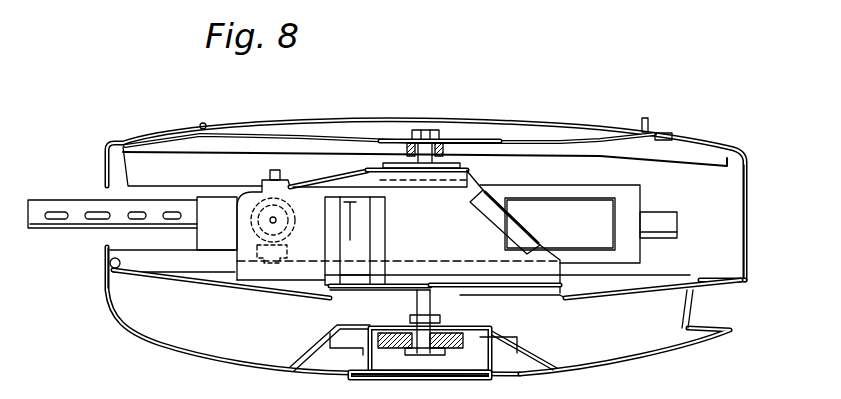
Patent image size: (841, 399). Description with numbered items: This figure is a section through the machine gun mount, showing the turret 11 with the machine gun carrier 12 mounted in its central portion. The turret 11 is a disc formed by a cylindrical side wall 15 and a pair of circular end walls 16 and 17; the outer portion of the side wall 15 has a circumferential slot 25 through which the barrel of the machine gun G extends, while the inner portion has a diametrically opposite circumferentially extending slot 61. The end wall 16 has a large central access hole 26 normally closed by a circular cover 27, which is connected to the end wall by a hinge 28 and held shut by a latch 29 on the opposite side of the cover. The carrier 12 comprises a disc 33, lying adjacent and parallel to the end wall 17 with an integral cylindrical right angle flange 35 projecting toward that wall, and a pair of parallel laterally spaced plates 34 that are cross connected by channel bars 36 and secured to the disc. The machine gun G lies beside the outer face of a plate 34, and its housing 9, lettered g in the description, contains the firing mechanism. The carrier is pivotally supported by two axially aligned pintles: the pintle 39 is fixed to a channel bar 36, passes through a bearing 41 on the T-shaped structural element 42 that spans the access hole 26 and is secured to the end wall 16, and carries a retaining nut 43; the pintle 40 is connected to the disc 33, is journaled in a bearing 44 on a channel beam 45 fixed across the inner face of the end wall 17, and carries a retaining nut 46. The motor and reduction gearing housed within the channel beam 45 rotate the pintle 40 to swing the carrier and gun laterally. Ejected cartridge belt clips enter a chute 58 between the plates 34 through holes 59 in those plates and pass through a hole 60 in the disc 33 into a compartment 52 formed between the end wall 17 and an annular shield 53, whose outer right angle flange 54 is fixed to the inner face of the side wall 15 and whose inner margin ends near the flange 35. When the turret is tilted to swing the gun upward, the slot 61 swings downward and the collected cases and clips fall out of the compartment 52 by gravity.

The machine gun G is at (46, 199).
The rear panel 9 is at (600, 186).
The turret 11 is at (755, 159).
The machine gun carrier 12 is at (227, 266).
The cylindrical side wall 15 is at (748, 228).
The end wall 16 is at (172, 123).
The end wall 17 is at (245, 364).
The circumferential slot 25 is at (117, 147).
The access hole 26 is at (663, 135).
The circular cover 27 is at (547, 119).
The hinge 28 is at (207, 125).
The latch 29 is at (657, 133).
The disc 33 is at (533, 292).
The plates 34 is at (468, 238).
The cylindrical right angle flange 35 is at (577, 297).
The channel bars 36 is at (493, 225).
The pintle 39 is at (441, 133).
The pintle 40 is at (441, 318).
The bearing 41 is at (370, 136).
The T-shaped structural element 42 is at (315, 137).
The retaining nut 43 is at (428, 130).
The bearing 44 is at (407, 318).
The channel beam 45 is at (330, 340).
The retaining nut 46 is at (430, 352).
The compartment 52 is at (622, 356).
The annular shield 53 is at (183, 282).
The right angle flange 54 is at (748, 267).
The chute 58 is at (288, 226).
The holes 59 is at (350, 217).
The hole 60 is at (367, 279).
The circumferentially extending slot 61 is at (691, 315).